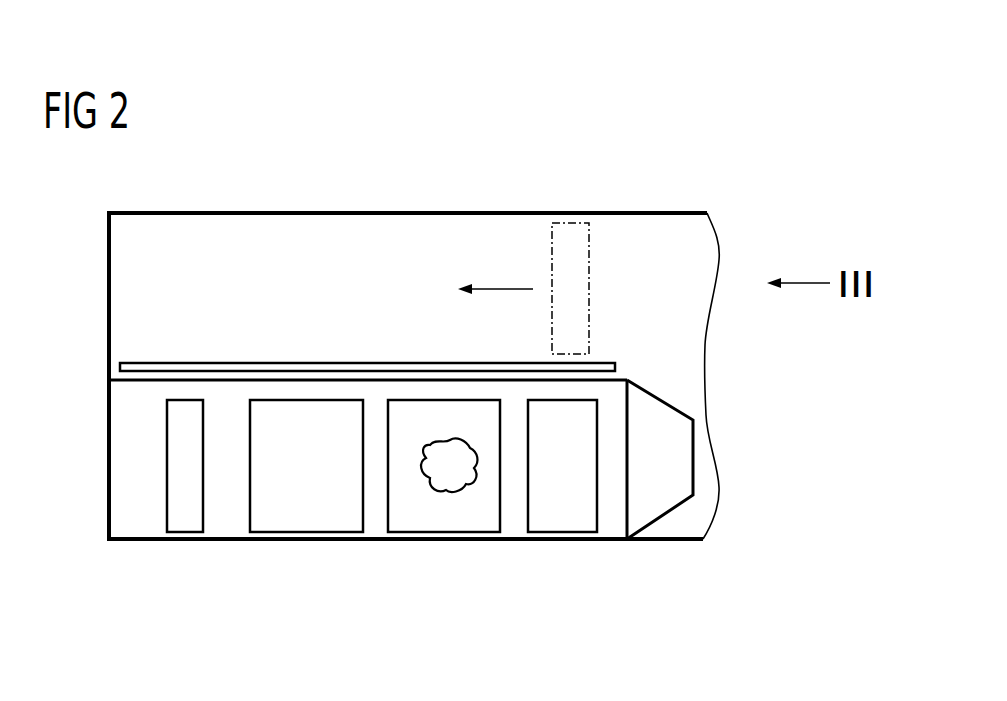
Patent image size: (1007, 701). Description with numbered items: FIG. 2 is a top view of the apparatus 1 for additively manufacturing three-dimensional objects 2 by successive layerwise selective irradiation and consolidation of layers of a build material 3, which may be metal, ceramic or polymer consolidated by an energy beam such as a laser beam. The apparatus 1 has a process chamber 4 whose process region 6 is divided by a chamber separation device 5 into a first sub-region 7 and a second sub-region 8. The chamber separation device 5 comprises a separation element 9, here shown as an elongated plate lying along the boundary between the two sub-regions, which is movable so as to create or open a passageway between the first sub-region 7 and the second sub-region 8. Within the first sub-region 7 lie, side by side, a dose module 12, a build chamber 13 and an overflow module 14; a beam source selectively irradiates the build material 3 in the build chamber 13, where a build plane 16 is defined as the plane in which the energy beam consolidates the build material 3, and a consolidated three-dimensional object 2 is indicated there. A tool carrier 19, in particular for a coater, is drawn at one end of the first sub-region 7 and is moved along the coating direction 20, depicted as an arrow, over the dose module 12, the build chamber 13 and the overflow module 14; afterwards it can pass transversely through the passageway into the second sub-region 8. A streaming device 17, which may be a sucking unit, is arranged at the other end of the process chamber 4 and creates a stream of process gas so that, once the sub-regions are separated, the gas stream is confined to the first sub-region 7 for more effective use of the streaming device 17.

The apparatus 1 is at (240, 185).
The three-dimensional object 2 is at (467, 488).
The build material 3 is at (277, 517).
The process chamber 4 is at (109, 512).
The chamber separation device 5 is at (634, 371).
The process region 6 is at (124, 430).
The first sub-region 7 is at (153, 430).
The second sub-region 8 is at (323, 315).
The separation element 9 is at (120, 366).
The dose module 12 is at (314, 572).
The build chamber 13 is at (448, 572).
The overflow module 14 is at (541, 572).
The build plane 16 is at (455, 415).
The streaming device 17 is at (687, 458).
The tool carrier 19 is at (167, 472).
The coating direction 20 is at (196, 570).